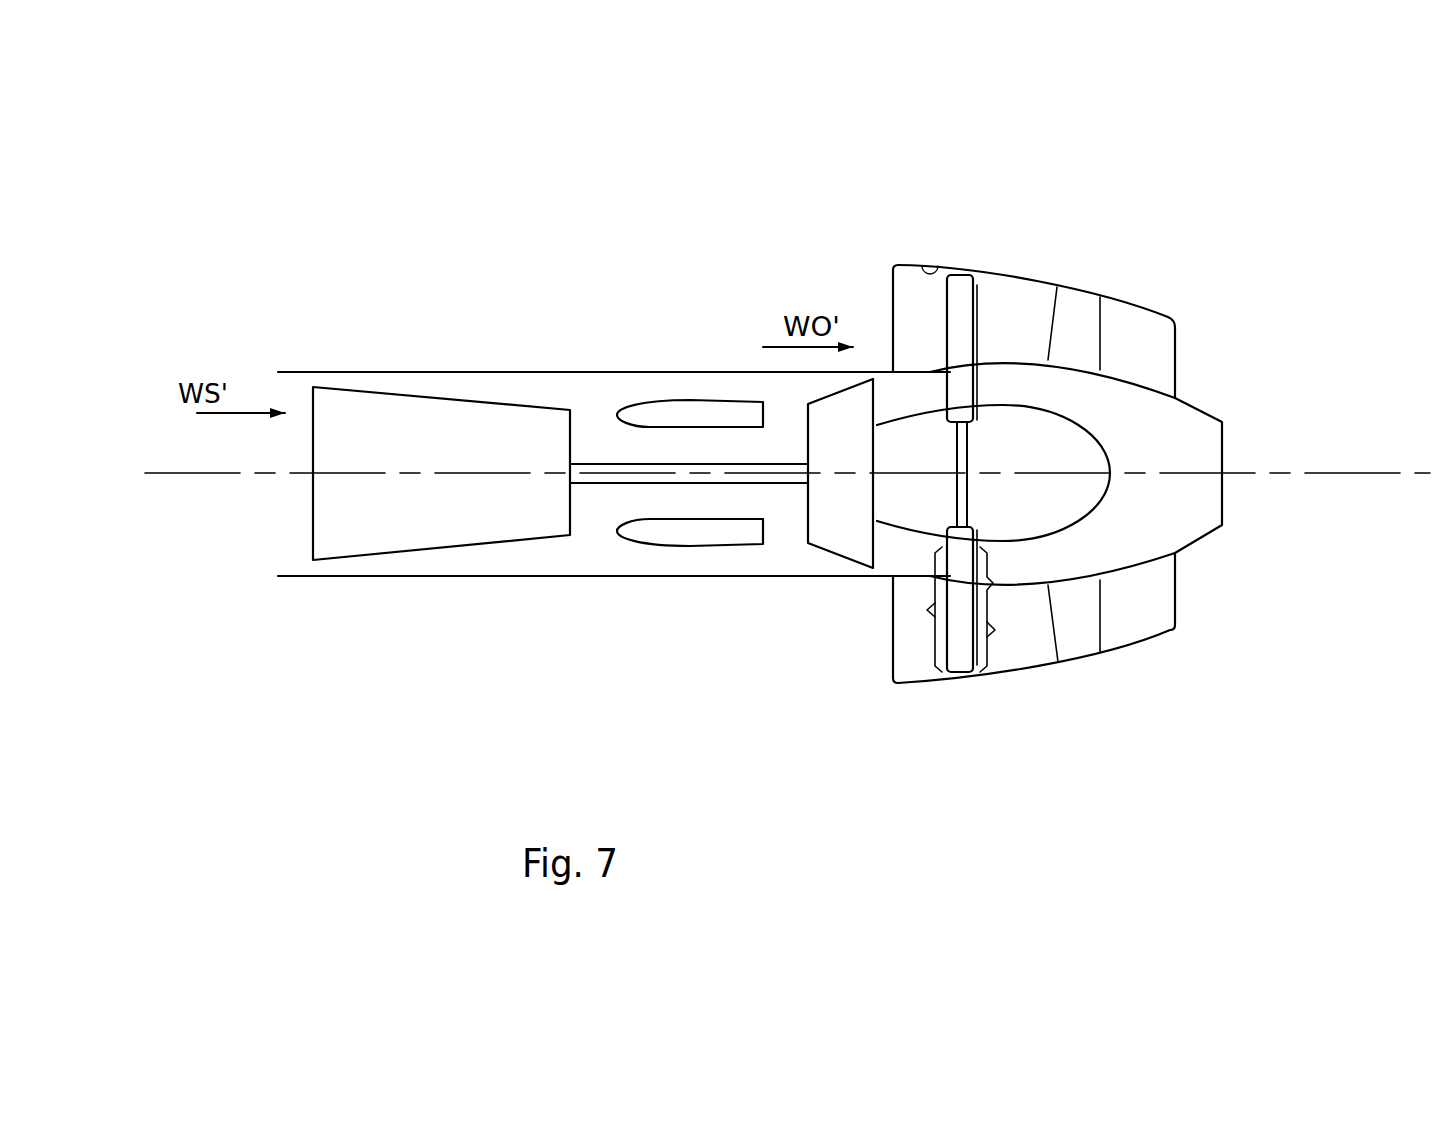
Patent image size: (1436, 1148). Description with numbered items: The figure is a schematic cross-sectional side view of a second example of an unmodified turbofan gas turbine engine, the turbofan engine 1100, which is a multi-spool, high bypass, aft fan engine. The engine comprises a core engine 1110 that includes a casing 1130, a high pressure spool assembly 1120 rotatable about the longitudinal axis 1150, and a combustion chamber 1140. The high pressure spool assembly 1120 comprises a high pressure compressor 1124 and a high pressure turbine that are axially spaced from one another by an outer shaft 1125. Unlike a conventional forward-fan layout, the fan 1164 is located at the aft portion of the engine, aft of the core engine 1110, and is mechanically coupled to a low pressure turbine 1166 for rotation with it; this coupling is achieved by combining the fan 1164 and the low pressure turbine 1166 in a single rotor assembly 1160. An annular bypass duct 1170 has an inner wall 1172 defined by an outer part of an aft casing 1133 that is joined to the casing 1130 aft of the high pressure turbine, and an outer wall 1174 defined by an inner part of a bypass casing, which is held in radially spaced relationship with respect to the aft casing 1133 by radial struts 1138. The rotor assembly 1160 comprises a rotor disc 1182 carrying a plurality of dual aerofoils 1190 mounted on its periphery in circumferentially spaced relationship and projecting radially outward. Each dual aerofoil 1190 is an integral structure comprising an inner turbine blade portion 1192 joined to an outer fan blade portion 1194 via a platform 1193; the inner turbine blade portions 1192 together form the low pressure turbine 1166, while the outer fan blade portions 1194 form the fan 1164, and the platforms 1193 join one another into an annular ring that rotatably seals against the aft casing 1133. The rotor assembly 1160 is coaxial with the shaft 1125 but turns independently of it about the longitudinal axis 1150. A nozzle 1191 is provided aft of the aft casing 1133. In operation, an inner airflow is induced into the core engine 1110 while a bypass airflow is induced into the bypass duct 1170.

The turbofan engine 1100 is at (1128, 218).
The core engine 1110 is at (743, 373).
The high pressure spool assembly 1120 is at (421, 482).
The high pressure compressor 1124 is at (428, 433).
The outer shaft 1125 is at (595, 463).
The casing 1130 is at (805, 575).
The aft casing 1133 is at (923, 575).
The radial struts 1138 is at (1080, 340).
The combustion chamber 1140 is at (657, 399).
The longitudinal axis 1150 is at (273, 473).
The rotor assembly 1160 is at (975, 303).
The fan 1164 is at (947, 387).
The low pressure turbine 1166 is at (947, 310).
The annular bypass duct 1170 is at (1027, 293).
The inner wall 1172 is at (1027, 358).
The outer wall 1174 is at (922, 267).
The rotor disc 1182 is at (980, 403).
The dual aerofoil 1190 is at (930, 607).
The nozzle 1191 is at (1193, 540).
The inner turbine blade portion 1192 is at (980, 567).
The platform 1193 is at (987, 587).
The outer fan blade portion 1194 is at (990, 627).